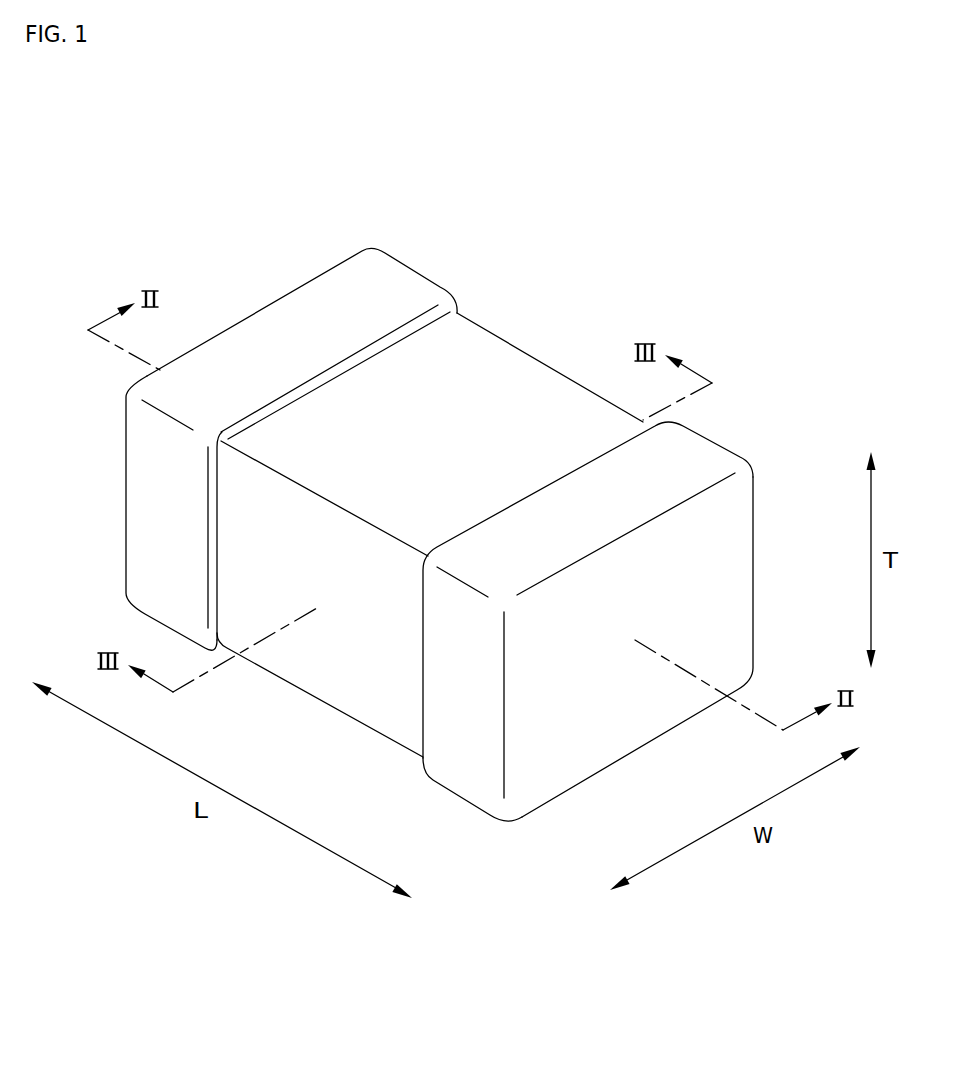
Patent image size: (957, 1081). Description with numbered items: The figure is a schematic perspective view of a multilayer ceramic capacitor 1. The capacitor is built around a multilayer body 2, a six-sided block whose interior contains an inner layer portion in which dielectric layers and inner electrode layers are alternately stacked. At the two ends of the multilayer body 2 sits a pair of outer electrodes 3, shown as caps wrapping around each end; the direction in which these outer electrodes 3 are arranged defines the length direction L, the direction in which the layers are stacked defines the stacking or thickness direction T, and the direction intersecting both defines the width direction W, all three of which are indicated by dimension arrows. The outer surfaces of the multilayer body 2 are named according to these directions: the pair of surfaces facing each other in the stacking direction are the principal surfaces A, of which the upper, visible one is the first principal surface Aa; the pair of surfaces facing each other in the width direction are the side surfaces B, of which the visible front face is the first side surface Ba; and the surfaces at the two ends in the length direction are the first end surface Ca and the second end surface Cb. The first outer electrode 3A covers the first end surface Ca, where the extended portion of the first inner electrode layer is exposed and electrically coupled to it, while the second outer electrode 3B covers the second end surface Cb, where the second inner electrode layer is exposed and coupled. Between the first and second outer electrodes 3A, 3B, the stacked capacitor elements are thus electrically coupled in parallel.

The multilayer ceramic capacitor 1 is at (788, 310).
The multilayer body 2 is at (357, 400).
The outer electrodes 3 is at (483, 514).
The first outer electrode 3A is at (388, 282).
The second outer electrode 3B is at (702, 458).
The principal surface A is at (435, 376).
The first principal surface Aa is at (473, 438).
The side surface B is at (322, 599).
The first side surface Ba is at (342, 582).
The first end surface Ca is at (215, 336).
The second end surface Cb is at (700, 582).